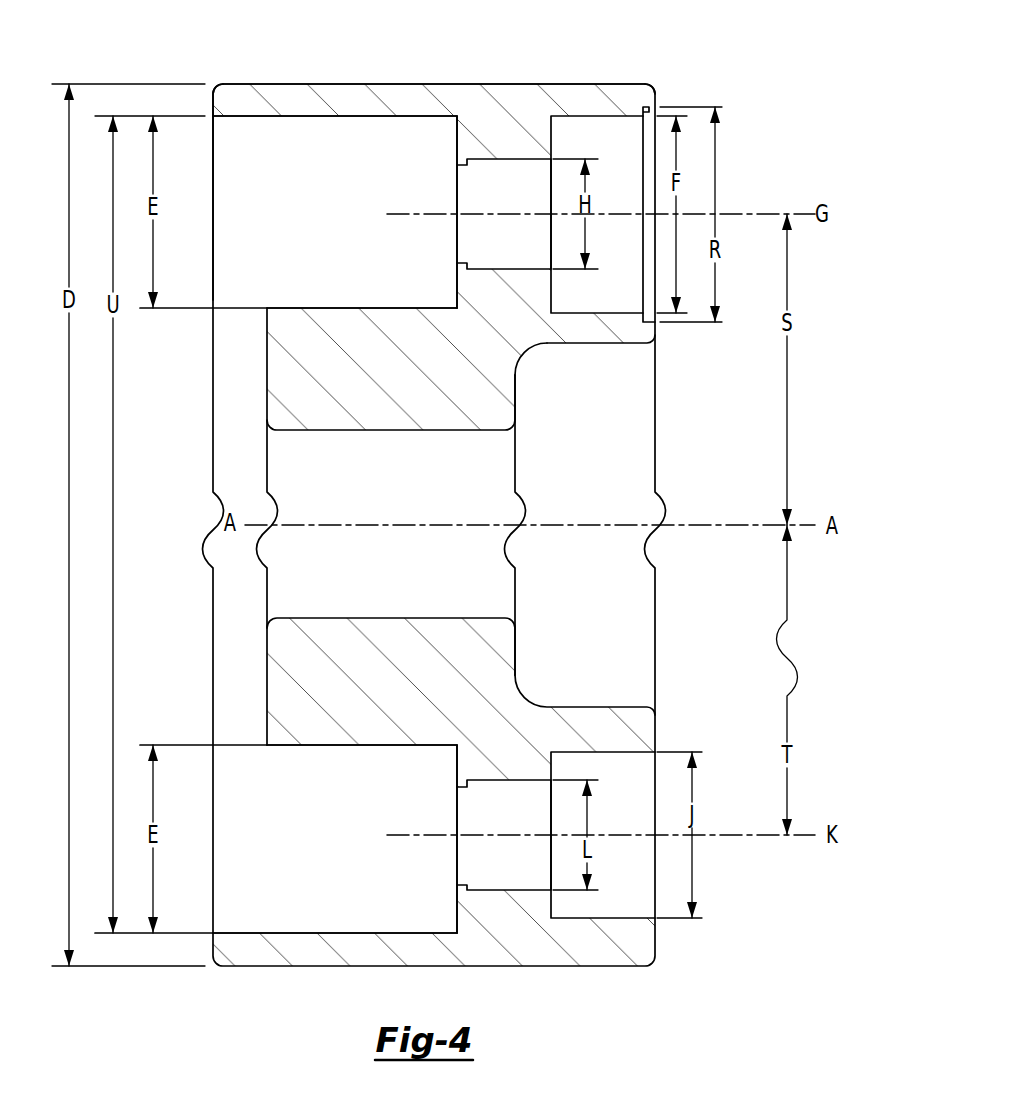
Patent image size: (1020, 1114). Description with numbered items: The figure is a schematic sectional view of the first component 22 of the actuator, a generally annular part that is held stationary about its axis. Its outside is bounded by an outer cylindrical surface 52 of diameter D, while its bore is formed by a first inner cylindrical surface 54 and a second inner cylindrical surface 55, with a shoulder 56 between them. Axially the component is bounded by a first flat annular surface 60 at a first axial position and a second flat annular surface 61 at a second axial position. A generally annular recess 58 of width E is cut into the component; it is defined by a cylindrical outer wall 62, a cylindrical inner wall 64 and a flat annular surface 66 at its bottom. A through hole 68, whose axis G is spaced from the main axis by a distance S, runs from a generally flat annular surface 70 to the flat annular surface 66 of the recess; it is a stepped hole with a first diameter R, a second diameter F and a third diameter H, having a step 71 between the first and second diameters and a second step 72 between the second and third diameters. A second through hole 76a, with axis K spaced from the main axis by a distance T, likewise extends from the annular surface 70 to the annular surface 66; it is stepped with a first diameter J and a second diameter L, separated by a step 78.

The first component 22 is at (410, 66).
The outer cylindrical surface 52 is at (300, 84).
The first inner cylindrical surface 54 is at (402, 431).
The second inner cylindrical surface 55 is at (613, 344).
The shoulder 56 is at (519, 370).
The recess 58 is at (333, 243).
The first flat annular surface 60 is at (212, 93).
The second flat annular surface 61 is at (267, 371).
The cylindrical outer wall 62 is at (320, 118).
The cylindrical inner wall 64 is at (330, 308).
The flat annular surface 66 is at (458, 135).
The through hole 68 is at (478, 205).
The generally flat annular surface 70 is at (656, 101).
The step 71 is at (645, 106).
The second step 72 is at (552, 130).
The second through hole 76a is at (478, 826).
The step 78 is at (550, 768).